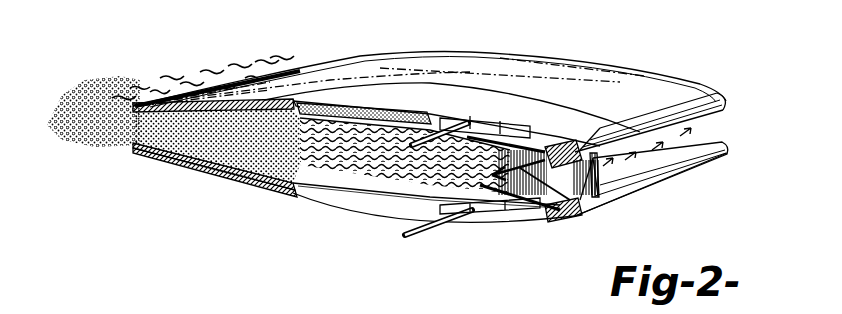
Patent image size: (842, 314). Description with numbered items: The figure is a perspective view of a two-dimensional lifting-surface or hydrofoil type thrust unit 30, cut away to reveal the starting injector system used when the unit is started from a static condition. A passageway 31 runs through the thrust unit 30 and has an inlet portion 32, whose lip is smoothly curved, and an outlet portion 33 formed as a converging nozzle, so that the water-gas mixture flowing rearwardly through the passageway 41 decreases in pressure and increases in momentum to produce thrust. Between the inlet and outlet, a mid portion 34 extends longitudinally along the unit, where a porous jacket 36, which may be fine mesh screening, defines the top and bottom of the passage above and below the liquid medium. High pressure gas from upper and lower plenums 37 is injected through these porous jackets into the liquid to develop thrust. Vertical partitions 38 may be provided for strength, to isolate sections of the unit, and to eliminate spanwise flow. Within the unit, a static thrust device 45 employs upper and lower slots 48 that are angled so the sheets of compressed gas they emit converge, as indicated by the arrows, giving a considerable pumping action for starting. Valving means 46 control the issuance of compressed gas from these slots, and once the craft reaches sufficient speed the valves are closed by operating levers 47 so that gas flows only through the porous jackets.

The thrust unit 30 is at (267, 197).
The passageway 31 is at (467, 137).
The inlet portion 32 is at (700, 128).
The outlet portion 33 is at (193, 165).
The mid portion 34 is at (380, 180).
The porous jacket 36 is at (380, 110).
The plenum 37 is at (337, 197).
The vertical partition 38 is at (593, 183).
The passageway 41 is at (227, 177).
The static thrust device 45 is at (560, 130).
The valving means 46 is at (531, 136).
The lever 47 is at (440, 117).
The slot 48 is at (540, 207).